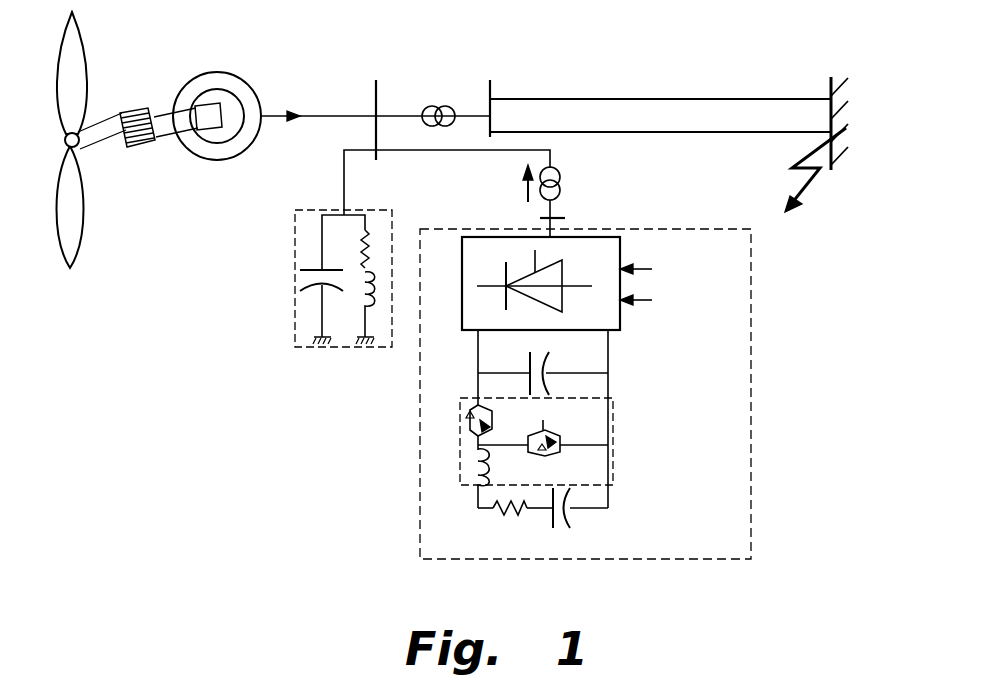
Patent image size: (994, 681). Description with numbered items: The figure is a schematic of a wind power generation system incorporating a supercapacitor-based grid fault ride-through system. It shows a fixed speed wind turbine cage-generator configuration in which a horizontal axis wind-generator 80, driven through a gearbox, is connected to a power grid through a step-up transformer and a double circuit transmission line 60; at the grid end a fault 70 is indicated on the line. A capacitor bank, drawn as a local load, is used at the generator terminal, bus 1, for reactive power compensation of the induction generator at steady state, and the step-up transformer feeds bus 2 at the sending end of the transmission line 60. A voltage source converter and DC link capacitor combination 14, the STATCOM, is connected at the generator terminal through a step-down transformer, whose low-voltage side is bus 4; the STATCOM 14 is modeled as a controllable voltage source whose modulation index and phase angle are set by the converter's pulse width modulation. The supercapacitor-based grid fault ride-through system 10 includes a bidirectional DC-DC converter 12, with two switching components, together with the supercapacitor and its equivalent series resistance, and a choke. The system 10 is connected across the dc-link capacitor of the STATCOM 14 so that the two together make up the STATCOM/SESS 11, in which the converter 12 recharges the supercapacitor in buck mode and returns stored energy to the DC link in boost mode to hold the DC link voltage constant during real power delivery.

The horizontal axis wind-generator 80 is at (238, 72).
The double circuit transmission line 60 is at (748, 99).
The fault 70 is at (817, 178).
The voltage source converter-DC link capacitor combination (STATCOM) 14 is at (620, 247).
The DC-DC converter 12 is at (612, 483).
The supercapacitor-based grid fault ride-through system 10 is at (594, 406).
The STATCOM/SESS 11 is at (478, 311).
The bus 1 (generator terminal) 1 is at (447, 182).
The bus 2 is at (488, 93).
The bus 4 is at (562, 223).